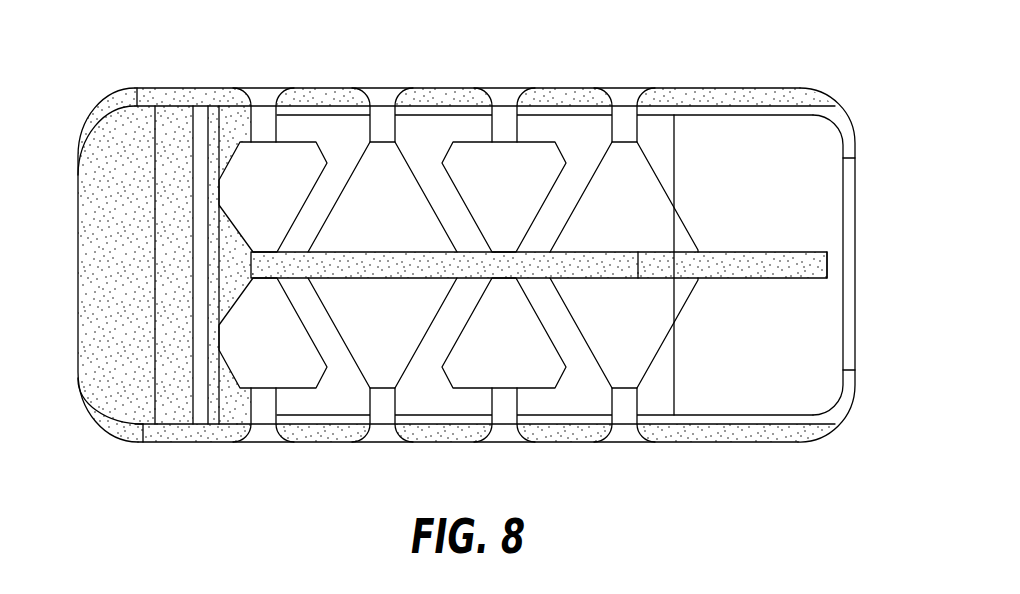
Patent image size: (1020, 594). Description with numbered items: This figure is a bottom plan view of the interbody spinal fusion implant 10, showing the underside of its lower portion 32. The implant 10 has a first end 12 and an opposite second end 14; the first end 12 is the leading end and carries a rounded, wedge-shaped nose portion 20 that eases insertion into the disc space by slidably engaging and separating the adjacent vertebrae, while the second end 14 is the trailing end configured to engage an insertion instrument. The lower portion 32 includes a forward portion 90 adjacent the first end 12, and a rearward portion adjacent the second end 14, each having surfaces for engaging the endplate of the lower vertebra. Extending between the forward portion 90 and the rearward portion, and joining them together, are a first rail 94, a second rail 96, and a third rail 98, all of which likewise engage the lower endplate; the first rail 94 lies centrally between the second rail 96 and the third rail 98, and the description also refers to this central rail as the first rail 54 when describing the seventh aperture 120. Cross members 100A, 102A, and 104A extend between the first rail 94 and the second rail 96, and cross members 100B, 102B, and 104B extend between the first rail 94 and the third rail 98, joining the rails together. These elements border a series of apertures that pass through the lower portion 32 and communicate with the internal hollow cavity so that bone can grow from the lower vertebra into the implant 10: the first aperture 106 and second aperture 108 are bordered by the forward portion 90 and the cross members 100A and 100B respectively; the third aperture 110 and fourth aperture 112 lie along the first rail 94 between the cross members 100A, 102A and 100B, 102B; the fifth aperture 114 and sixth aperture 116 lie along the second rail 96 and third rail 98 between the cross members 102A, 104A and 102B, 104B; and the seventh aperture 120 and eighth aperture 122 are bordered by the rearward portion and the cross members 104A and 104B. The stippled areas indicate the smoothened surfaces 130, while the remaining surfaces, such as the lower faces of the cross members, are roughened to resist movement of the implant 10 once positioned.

The implant 10 is at (176, 57).
The first end 12 is at (74, 363).
The second end 14 is at (862, 207).
The nose portion 20 is at (105, 260).
The lower portion 32 is at (735, 125).
The first rail 54 is at (508, 265).
The forward portion 90 is at (206, 128).
The first rail 94 is at (827, 264).
The second rail 96 is at (452, 100).
The third rail 98 is at (565, 428).
The cross member 100A is at (317, 200).
The cross member 100B is at (333, 348).
The cross member 102A is at (437, 192).
The cross member 102B is at (447, 338).
The cross member 104A is at (573, 180).
The cross member 104B is at (573, 347).
The first aperture 106 is at (262, 128).
The second aperture 108 is at (262, 388).
The third aperture 110 is at (354, 172).
The fourth aperture 112 is at (400, 377).
The fifth aperture 114 is at (505, 140).
The sixth aperture 116 is at (533, 387).
The seventh aperture 120 is at (642, 147).
The eighth aperture 122 is at (658, 375).
The smoothened surfaces 130 is at (102, 178).